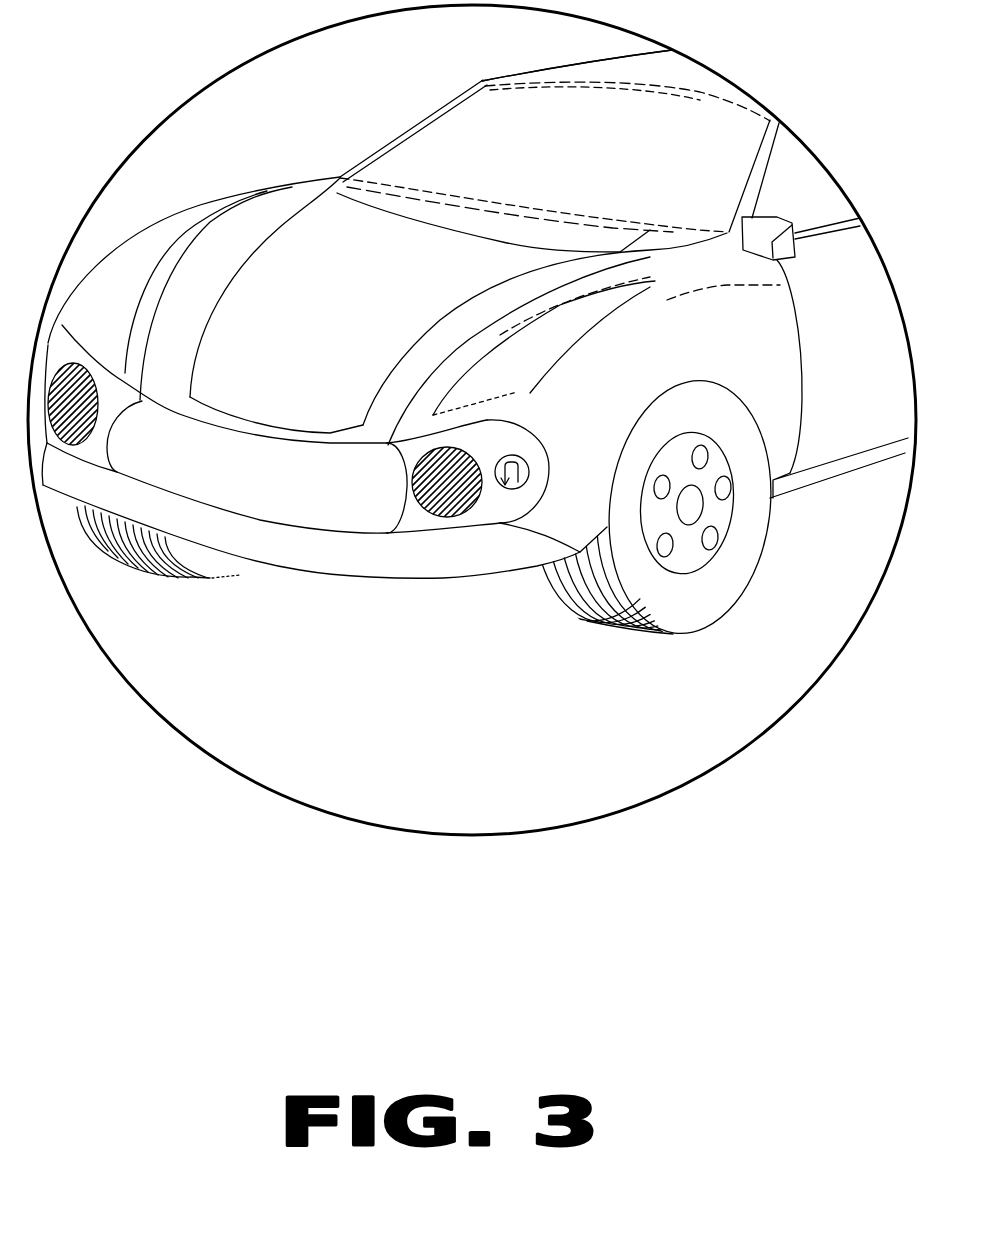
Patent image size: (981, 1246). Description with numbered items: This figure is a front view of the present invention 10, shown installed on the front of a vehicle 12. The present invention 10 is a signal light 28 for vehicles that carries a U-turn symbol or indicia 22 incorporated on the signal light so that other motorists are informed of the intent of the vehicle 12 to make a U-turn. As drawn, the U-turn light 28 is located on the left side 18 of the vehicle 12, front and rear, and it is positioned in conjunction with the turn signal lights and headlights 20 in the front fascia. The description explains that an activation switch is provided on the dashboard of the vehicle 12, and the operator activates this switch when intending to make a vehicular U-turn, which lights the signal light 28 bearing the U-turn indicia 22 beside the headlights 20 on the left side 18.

The present invention 10 is at (454, 359).
The vehicle 12 is at (613, 72).
The left side 18 is at (568, 440).
The headlights 20 is at (424, 505).
The U-turn symbol or indicia 22 is at (503, 445).
The signal light 28 is at (507, 490).